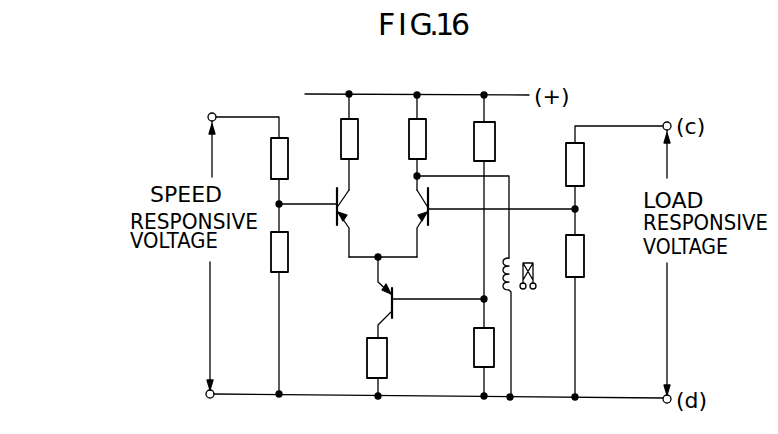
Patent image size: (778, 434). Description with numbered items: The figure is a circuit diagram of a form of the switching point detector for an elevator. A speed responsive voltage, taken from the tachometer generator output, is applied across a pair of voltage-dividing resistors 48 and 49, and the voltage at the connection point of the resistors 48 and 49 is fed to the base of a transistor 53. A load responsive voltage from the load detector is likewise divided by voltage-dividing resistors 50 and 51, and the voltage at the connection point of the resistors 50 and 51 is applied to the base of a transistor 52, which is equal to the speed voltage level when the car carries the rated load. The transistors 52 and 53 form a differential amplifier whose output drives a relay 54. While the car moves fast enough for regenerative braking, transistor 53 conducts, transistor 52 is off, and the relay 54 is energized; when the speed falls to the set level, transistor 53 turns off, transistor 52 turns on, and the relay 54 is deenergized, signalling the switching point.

The voltage-dividing resistor 48 is at (271, 146).
The voltage-dividing resistor 49 is at (271, 248).
The voltage-dividing resistor 50 is at (584, 164).
The voltage-dividing resistor 51 is at (584, 240).
The transistor 52 is at (444, 213).
The transistor 53 is at (341, 213).
The relay 54 is at (531, 290).